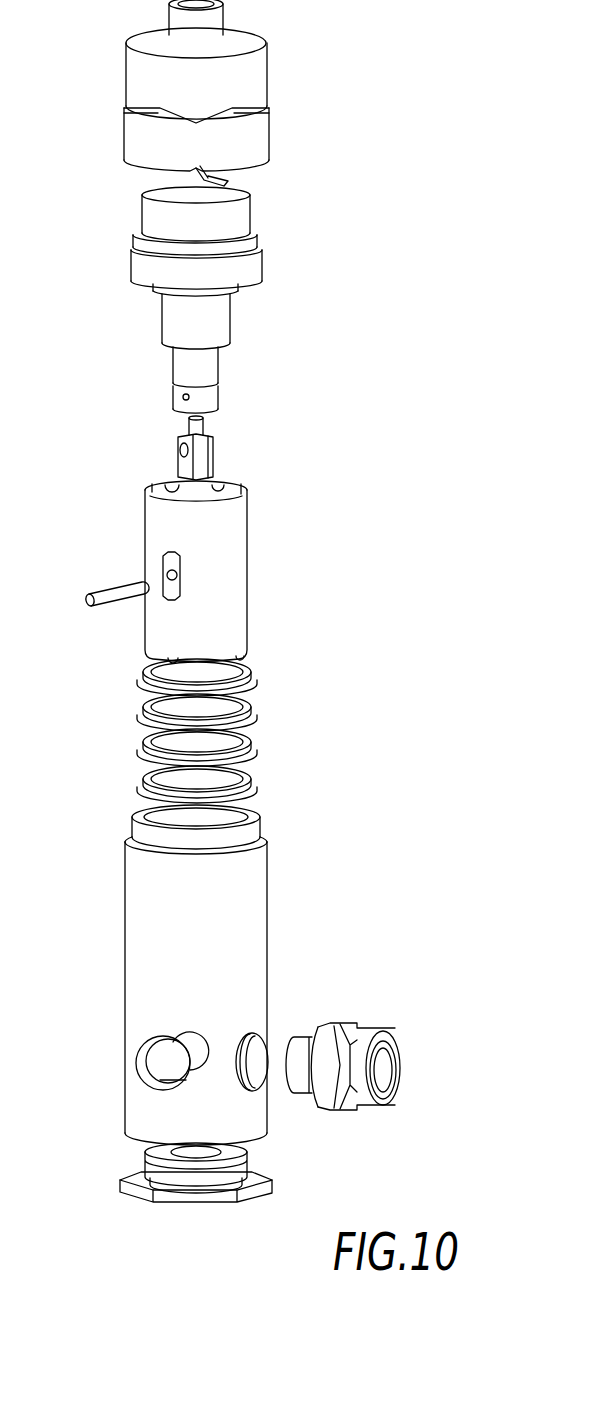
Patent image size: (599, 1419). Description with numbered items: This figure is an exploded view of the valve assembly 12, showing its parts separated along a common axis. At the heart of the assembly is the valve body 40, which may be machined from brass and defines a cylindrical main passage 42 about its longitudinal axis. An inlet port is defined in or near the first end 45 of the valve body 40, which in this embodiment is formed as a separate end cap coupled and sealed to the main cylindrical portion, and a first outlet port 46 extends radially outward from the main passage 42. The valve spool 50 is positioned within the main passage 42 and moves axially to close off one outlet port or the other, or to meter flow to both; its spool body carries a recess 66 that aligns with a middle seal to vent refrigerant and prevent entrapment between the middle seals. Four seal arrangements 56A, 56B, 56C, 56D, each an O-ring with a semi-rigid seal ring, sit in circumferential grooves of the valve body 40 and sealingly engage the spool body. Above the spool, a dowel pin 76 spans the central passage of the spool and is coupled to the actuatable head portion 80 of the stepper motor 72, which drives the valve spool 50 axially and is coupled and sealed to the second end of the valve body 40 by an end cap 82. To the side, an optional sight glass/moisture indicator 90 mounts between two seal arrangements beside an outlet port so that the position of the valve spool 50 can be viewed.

The valve assembly 12 is at (410, 72).
The end cap 82 is at (288, 67).
The stepper motor 72 is at (259, 324).
The actuatable head portion 80 is at (240, 451).
The valve spool 50 is at (232, 570).
The recess 66 is at (172, 598).
The dowel pin 76 is at (115, 590).
The seal arrangement 56A is at (275, 668).
The seal arrangement 56B is at (275, 704).
The seal arrangement 56C is at (275, 742).
The seal arrangement 56D is at (275, 783).
The valve body 40 is at (235, 982).
The main passage 42 is at (152, 1048).
The first outlet port 46 is at (160, 1070).
The first end 45 is at (120, 1212).
The sight glass/moisture indicator 90 is at (365, 1005).